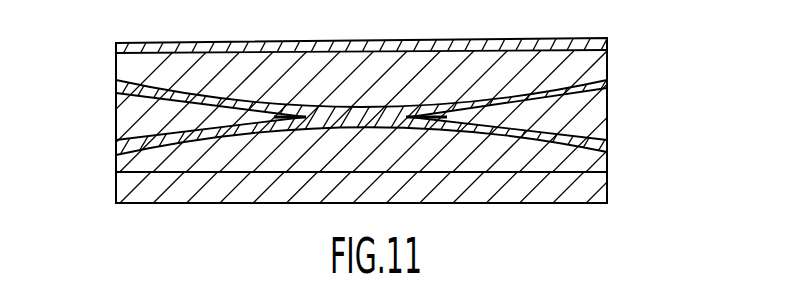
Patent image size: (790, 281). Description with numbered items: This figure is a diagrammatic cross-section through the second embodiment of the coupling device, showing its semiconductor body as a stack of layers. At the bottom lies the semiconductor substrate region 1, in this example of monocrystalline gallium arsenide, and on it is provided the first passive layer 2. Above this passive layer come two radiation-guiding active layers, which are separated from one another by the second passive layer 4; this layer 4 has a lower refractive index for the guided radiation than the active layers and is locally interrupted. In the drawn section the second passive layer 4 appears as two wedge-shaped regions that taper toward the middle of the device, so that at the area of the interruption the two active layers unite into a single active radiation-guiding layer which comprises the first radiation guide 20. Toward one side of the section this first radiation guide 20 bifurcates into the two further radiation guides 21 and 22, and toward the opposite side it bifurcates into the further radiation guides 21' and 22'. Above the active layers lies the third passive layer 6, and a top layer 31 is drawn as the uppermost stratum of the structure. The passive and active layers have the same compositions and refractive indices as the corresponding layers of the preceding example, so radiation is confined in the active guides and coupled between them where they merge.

The semiconductor substrate region 1 is at (600, 192).
The first passive layer 2 is at (587, 158).
The second passive layer 4 is at (595, 116).
The third passive layer 6 is at (597, 64).
The cover layer 31 is at (594, 45).
The first radiation guide 20 is at (325, 119).
The further radiation guide 21 is at (396, 111).
The further radiation guide 22 is at (396, 111).
The further radiation guide 21' is at (98, 151).
The further radiation guide 22' is at (95, 93).